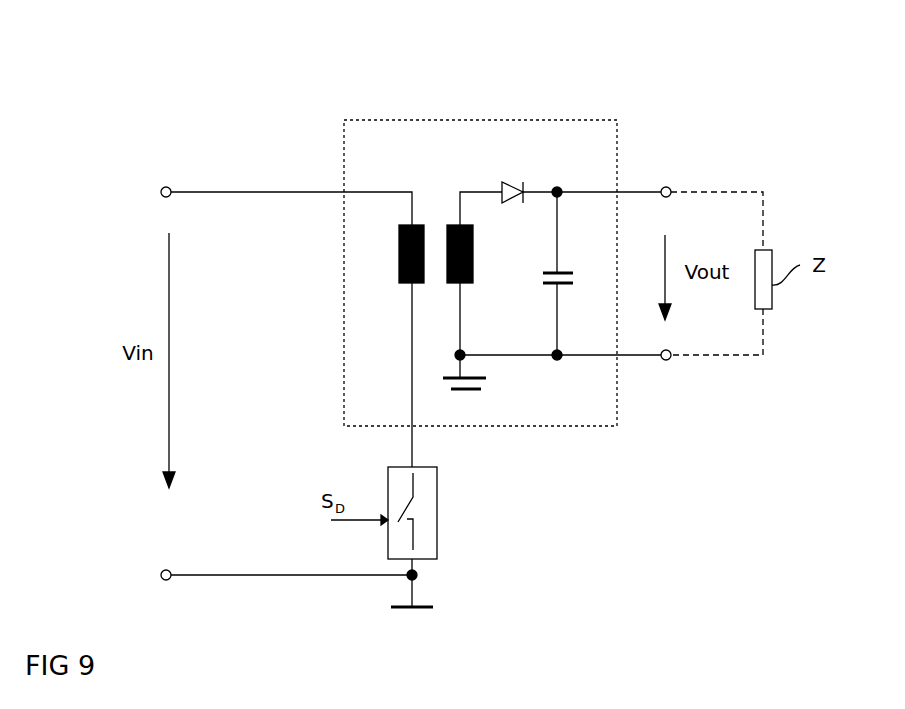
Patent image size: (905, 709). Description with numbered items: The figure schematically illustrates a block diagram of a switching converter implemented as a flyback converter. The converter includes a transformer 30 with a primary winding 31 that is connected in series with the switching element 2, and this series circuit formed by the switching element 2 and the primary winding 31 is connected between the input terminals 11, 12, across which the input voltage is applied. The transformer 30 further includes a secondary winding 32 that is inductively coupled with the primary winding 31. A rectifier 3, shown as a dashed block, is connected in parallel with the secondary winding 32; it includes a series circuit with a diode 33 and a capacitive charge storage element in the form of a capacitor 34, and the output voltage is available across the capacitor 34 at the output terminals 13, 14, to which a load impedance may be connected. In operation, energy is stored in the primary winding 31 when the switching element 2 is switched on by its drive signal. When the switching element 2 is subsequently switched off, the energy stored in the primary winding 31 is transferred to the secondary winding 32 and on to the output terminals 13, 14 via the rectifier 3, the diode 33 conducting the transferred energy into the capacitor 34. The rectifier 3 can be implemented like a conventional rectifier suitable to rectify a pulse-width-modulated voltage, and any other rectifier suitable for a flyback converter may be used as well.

The switching element 2 is at (437, 517).
The rectifier 3 is at (477, 119).
The input terminal 11 is at (164, 187).
The input terminal 12 is at (161, 580).
The output terminal 13 is at (669, 187).
The output terminal 14 is at (669, 360).
The transformer 30 is at (435, 214).
The primary winding 31 is at (399, 263).
The secondary winding 32 is at (473, 263).
The diode 33 is at (512, 182).
The capacitor 34 is at (570, 272).